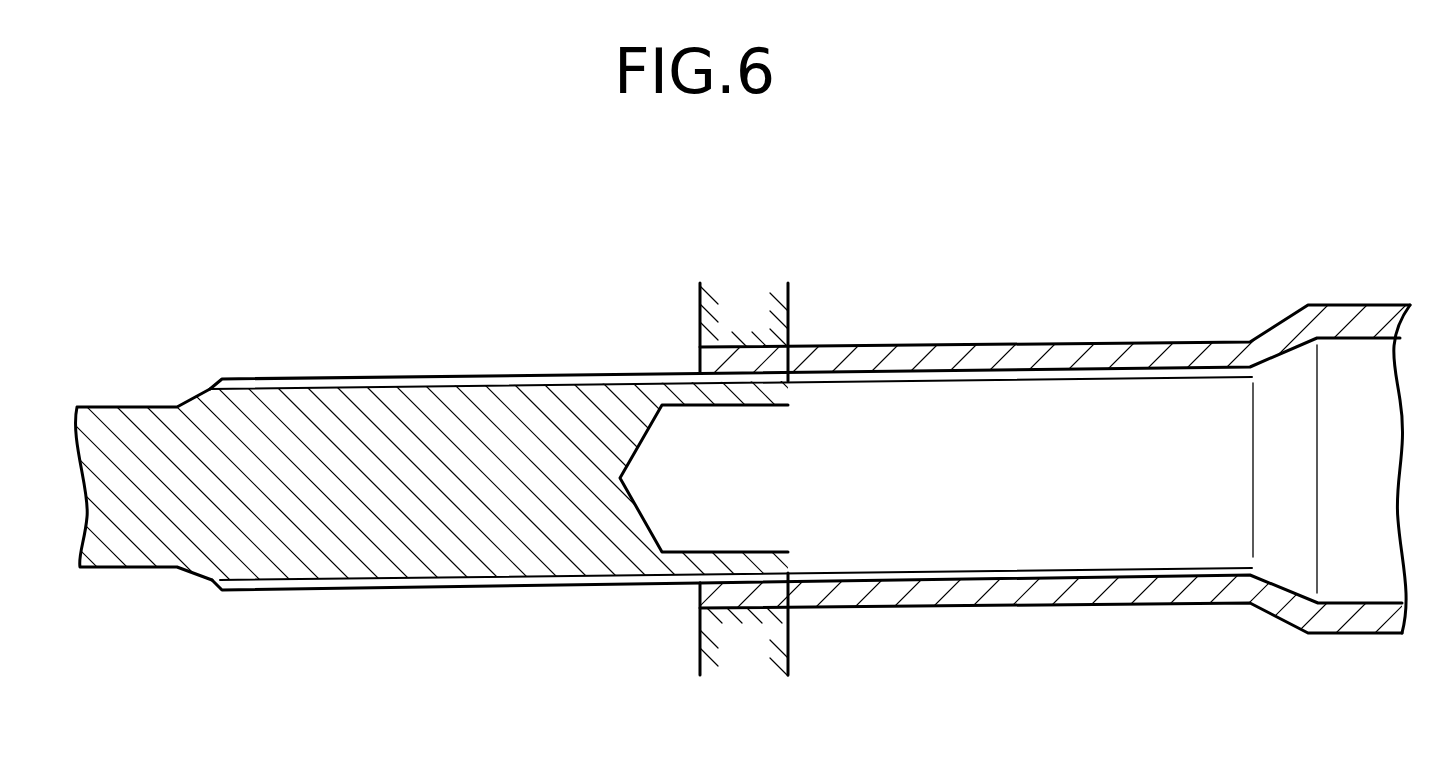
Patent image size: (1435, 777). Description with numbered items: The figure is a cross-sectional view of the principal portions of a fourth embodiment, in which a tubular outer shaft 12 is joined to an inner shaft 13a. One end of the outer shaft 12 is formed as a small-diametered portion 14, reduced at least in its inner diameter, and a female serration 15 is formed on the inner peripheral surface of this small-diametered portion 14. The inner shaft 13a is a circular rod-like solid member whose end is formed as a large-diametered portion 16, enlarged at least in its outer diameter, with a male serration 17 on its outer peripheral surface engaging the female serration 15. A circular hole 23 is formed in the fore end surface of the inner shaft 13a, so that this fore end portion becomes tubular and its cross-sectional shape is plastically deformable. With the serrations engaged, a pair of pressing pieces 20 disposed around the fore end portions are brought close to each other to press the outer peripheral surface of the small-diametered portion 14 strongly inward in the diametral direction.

The tubular outer shaft 12 is at (1077, 345).
The inner shaft 13a is at (352, 573).
The small-diametered portion 14 is at (1002, 600).
The female serration 15 is at (1112, 566).
The large-diametered portion 16 is at (486, 571).
The male serration 17 is at (421, 377).
The pressing pieces 20 is at (767, 312).
The circular hole 23 is at (771, 546).